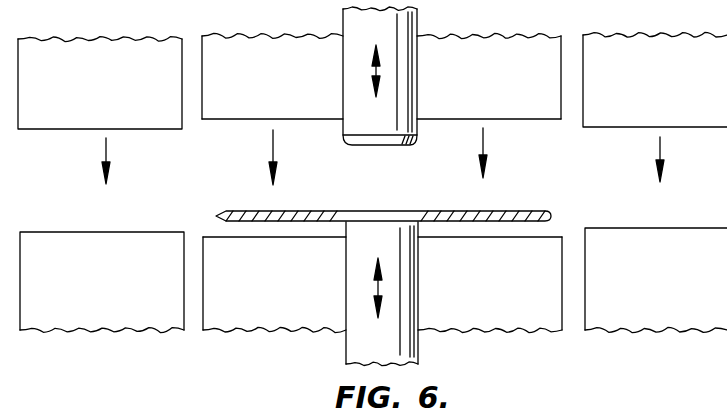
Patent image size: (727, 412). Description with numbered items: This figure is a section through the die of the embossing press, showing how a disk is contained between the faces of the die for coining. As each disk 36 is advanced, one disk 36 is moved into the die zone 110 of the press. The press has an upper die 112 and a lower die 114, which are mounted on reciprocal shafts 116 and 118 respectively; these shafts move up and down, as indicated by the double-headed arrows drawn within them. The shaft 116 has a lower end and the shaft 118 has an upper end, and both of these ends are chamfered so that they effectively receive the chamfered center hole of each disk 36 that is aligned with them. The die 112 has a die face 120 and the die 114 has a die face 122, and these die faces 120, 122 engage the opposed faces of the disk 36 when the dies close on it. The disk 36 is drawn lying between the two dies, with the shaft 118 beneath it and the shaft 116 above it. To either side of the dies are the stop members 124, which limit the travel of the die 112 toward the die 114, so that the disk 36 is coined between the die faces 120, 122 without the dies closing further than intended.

The disk 36 is at (523, 209).
The die zone 110 is at (541, 180).
The die 112 is at (528, 55).
The die 114 is at (535, 322).
The reciprocal shaft 116 is at (406, 90).
The reciprocal shaft 118 is at (411, 296).
The die face 120 is at (523, 119).
The die face 122 is at (555, 235).
The stop members 124 is at (138, 246).